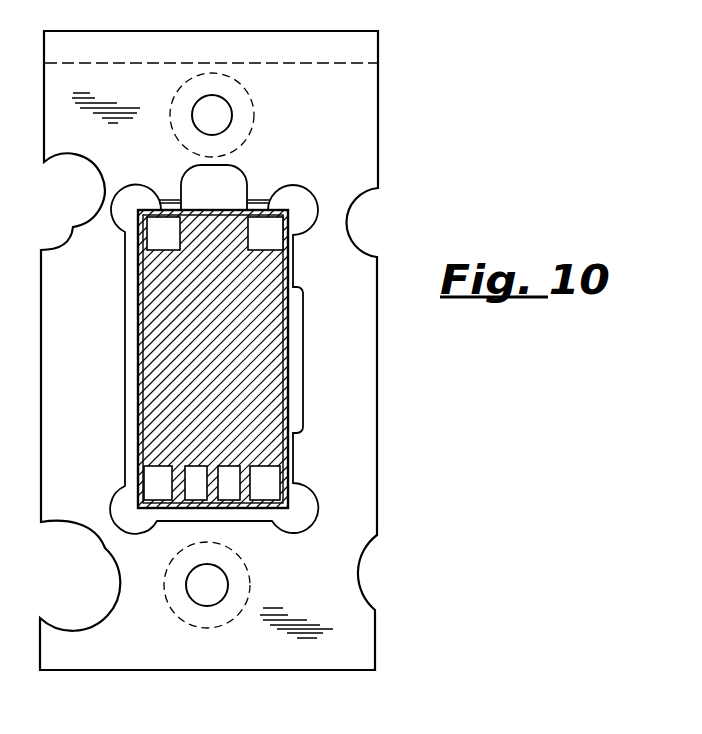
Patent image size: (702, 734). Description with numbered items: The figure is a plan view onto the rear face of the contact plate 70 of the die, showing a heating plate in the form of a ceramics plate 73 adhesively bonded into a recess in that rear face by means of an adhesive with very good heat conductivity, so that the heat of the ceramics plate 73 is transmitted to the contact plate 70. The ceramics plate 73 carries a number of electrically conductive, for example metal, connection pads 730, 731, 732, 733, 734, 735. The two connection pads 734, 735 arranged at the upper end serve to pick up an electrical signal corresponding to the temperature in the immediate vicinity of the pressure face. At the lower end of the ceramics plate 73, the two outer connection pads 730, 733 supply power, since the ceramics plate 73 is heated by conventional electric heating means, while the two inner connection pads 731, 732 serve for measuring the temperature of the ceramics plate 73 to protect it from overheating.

The contact plate 70 is at (357, 121).
The ceramics plate 73 is at (312, 394).
The connection pad 730 is at (158, 483).
The connection pad 731 is at (200, 490).
The connection pad 732 is at (233, 490).
The connection pad 733 is at (267, 484).
The connection pad 734 is at (170, 228).
The connection pad 735 is at (256, 228).